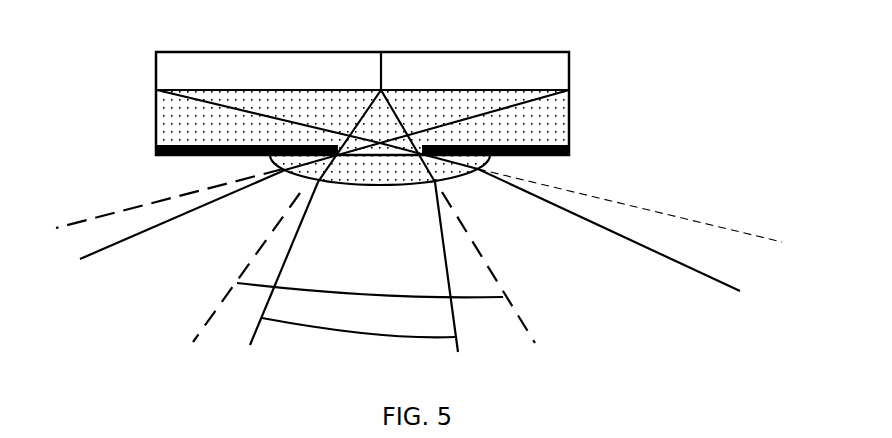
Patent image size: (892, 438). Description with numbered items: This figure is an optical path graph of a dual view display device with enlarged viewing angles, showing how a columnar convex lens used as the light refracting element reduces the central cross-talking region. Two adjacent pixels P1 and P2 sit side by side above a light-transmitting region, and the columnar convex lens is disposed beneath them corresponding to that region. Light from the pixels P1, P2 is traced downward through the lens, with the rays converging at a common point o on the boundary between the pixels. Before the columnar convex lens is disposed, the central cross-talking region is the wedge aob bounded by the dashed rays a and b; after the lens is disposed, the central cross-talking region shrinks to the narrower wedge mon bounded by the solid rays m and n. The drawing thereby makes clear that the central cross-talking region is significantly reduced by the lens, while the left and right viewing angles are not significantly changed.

The apex of central cross-talking region o is at (389, 46).
The first pixel P1 is at (268, 71).
The second pixel P2 is at (475, 71).
The left boundary of central cross-talking region before lens a is at (236, 267).
The right boundary of central cross-talking region before lens b is at (505, 267).
The left boundary of central cross-talking region after lens m is at (315, 230).
The right boundary of central cross-talking region after lens n is at (427, 240).